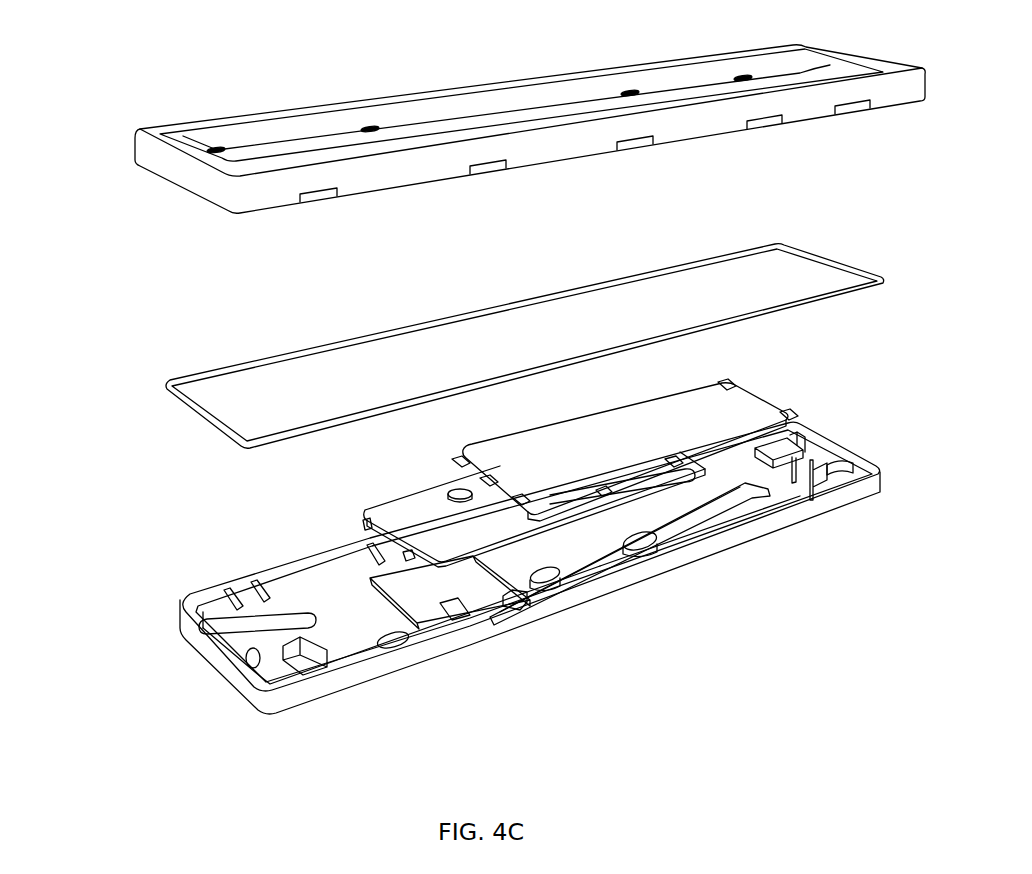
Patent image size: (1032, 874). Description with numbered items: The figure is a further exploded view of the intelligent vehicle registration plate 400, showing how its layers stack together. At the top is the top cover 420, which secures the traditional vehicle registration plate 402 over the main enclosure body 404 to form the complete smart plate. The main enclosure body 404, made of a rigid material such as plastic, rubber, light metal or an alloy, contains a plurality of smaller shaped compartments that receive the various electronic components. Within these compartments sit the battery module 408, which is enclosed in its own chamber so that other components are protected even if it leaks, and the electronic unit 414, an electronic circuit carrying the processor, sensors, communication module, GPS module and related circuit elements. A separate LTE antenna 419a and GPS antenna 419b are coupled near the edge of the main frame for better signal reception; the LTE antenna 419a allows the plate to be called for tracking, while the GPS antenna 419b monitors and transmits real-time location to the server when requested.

The intelligent vehicle registration plate 400 is at (125, 270).
The top cover 420 is at (146, 133).
The traditional vehicle registration plate 402 is at (201, 376).
The main enclosure body 404 is at (181, 599).
The battery module 408 is at (748, 486).
The LTE antenna 419a is at (650, 558).
The GPS antenna 419b is at (522, 598).
The electronic unit 414 is at (450, 628).